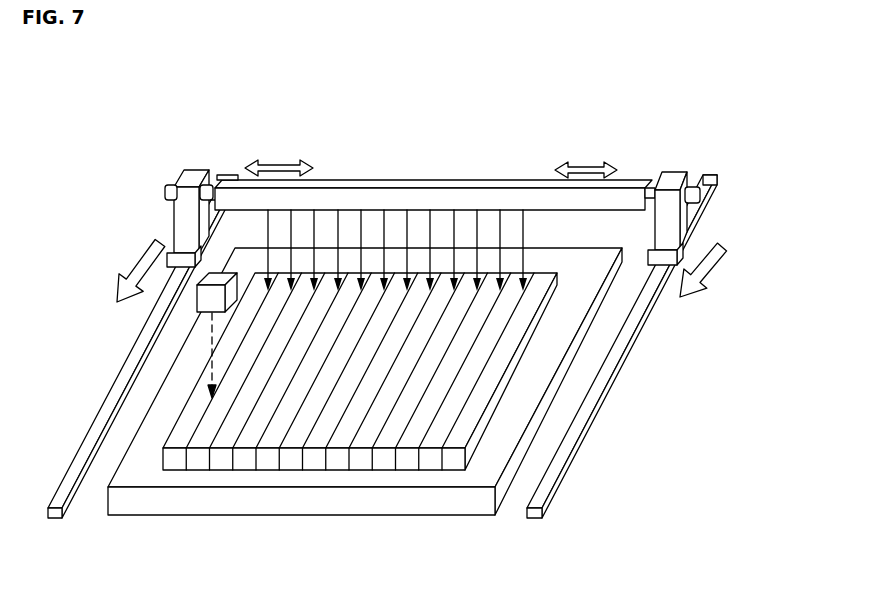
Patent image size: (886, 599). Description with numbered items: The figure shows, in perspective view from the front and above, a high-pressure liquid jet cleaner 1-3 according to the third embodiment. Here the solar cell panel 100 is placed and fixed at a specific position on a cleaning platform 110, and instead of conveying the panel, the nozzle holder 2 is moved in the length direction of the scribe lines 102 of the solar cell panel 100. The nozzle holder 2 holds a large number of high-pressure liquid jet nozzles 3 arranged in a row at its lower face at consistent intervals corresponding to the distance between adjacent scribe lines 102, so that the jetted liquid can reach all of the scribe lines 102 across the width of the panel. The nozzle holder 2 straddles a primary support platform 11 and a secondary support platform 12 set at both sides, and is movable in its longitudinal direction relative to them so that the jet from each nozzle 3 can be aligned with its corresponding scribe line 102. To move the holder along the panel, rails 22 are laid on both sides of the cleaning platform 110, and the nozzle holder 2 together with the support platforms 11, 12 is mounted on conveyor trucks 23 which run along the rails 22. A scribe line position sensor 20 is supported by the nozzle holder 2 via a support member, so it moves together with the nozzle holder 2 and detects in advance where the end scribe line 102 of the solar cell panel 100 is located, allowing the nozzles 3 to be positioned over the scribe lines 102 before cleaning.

The high-pressure liquid jet cleaner 1-3 is at (442, 182).
The nozzle holder 2 is at (624, 174).
The high-pressure liquid jet nozzles 3 is at (290, 211).
The primary support platform 11 is at (697, 241).
The secondary support platform 12 is at (193, 168).
The scribe line position sensor 20 is at (196, 297).
The rails 22 is at (65, 513).
The conveyor trucks 23 is at (168, 252).
The solar cell panel 100 is at (243, 462).
The scribe lines 102 is at (215, 434).
The cleaning platform 110 is at (460, 480).